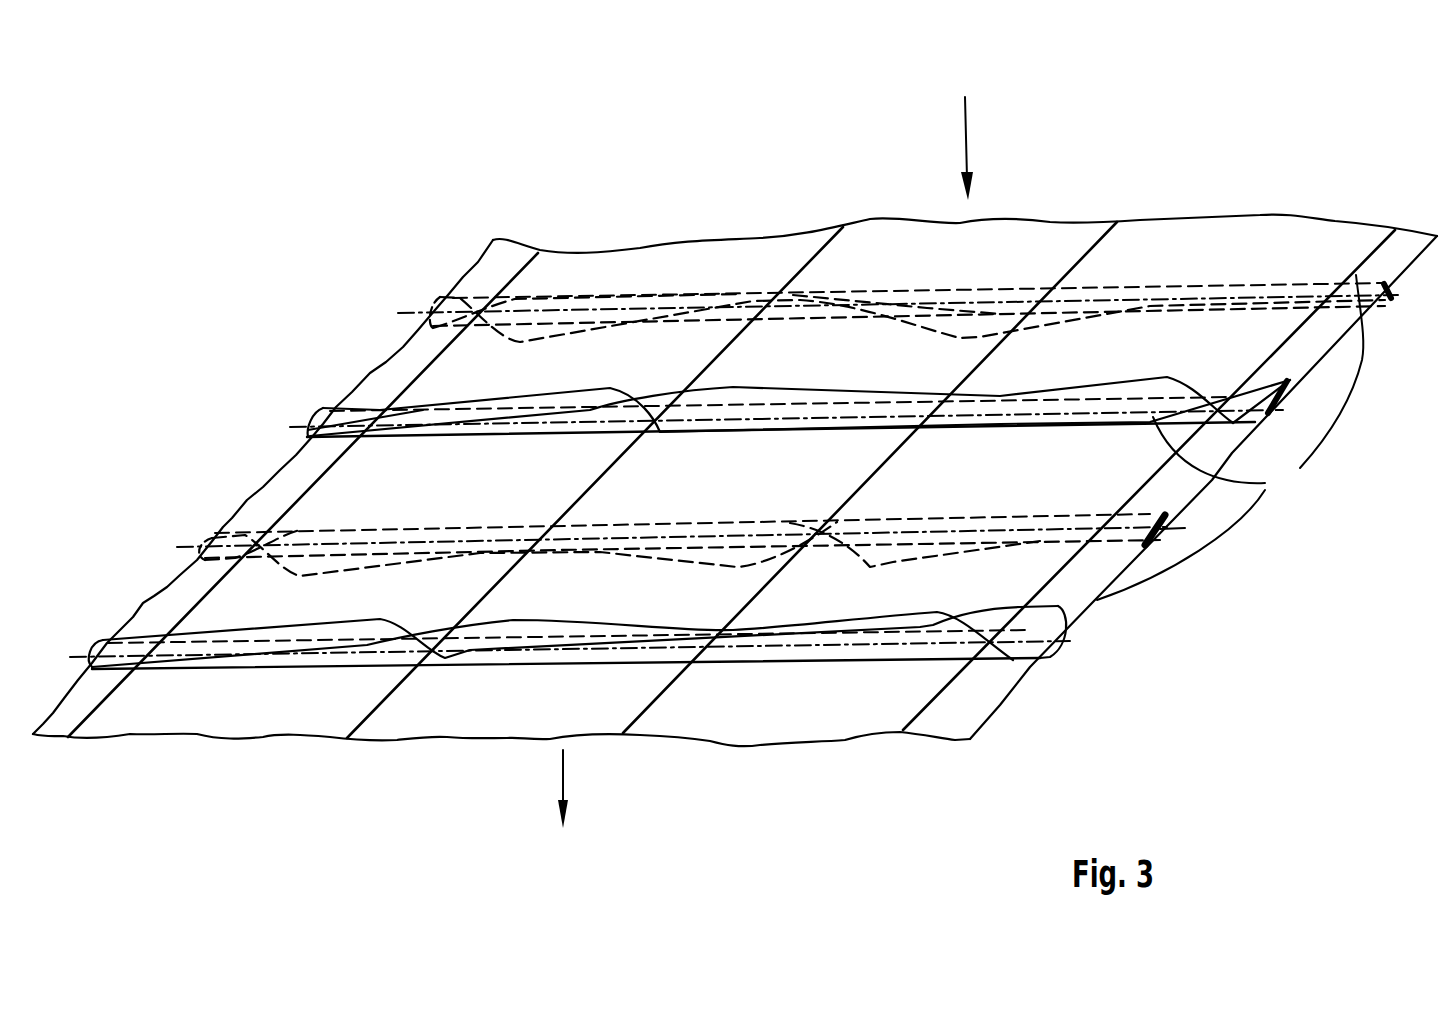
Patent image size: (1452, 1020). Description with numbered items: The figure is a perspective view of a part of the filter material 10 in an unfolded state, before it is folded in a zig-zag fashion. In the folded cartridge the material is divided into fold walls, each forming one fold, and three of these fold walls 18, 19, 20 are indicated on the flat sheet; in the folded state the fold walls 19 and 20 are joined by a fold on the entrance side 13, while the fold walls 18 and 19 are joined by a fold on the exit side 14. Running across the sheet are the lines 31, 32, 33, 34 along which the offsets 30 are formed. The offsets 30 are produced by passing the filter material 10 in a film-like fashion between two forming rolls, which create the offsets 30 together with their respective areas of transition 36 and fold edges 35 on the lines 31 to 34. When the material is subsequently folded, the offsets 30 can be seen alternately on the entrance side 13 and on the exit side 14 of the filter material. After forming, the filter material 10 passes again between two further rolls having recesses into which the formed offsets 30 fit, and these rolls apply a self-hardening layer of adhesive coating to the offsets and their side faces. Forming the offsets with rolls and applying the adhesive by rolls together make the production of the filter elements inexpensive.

The filter material 10 is at (1207, 228).
The entrance side 13 is at (964, 130).
The exit side 14 is at (562, 809).
The fold wall 18 is at (215, 728).
The fold wall 19 is at (522, 723).
The fold wall 20 is at (775, 727).
The offsets 30 is at (1230, 437).
The line 31 is at (80, 657).
The line 32 is at (192, 547).
The line 33 is at (297, 427).
The line 34 is at (407, 313).
The fold edges 35 is at (540, 263).
The areas of transition 36 is at (470, 662).